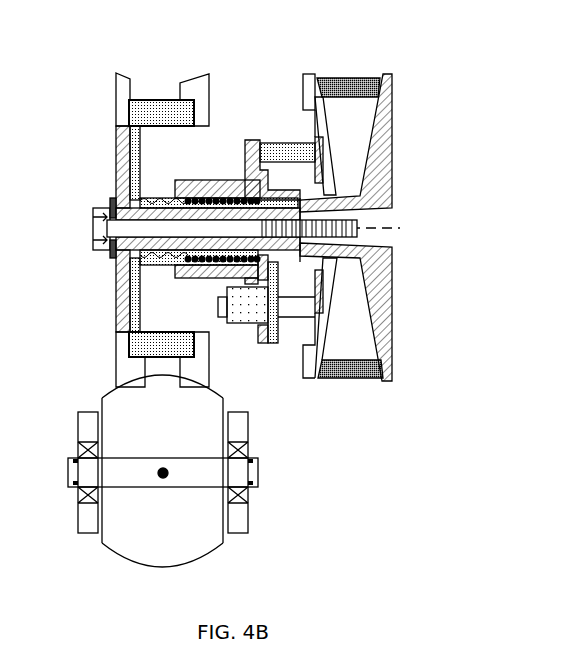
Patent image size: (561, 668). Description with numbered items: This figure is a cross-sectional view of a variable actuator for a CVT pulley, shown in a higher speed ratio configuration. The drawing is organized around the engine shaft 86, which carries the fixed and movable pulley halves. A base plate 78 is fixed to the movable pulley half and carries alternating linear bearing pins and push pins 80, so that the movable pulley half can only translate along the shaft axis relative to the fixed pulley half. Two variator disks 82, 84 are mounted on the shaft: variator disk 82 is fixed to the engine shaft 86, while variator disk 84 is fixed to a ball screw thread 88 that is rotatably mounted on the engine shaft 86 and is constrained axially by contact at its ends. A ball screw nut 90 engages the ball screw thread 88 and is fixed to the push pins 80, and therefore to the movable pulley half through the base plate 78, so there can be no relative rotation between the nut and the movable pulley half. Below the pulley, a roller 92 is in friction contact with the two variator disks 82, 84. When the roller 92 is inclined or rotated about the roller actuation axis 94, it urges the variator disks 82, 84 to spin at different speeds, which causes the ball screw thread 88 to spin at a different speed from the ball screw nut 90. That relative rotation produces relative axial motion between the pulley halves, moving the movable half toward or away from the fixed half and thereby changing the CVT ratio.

The base plate 78 is at (318, 170).
The push pins 80 is at (287, 152).
The variator disk 82 is at (123, 83).
The variator disk 84 is at (192, 86).
The engine shaft 86 is at (383, 240).
The ball screw thread 88 is at (155, 188).
The ball screw nut 90 is at (180, 265).
The roller 92 is at (183, 425).
The roller actuation axis 94 is at (168, 475).